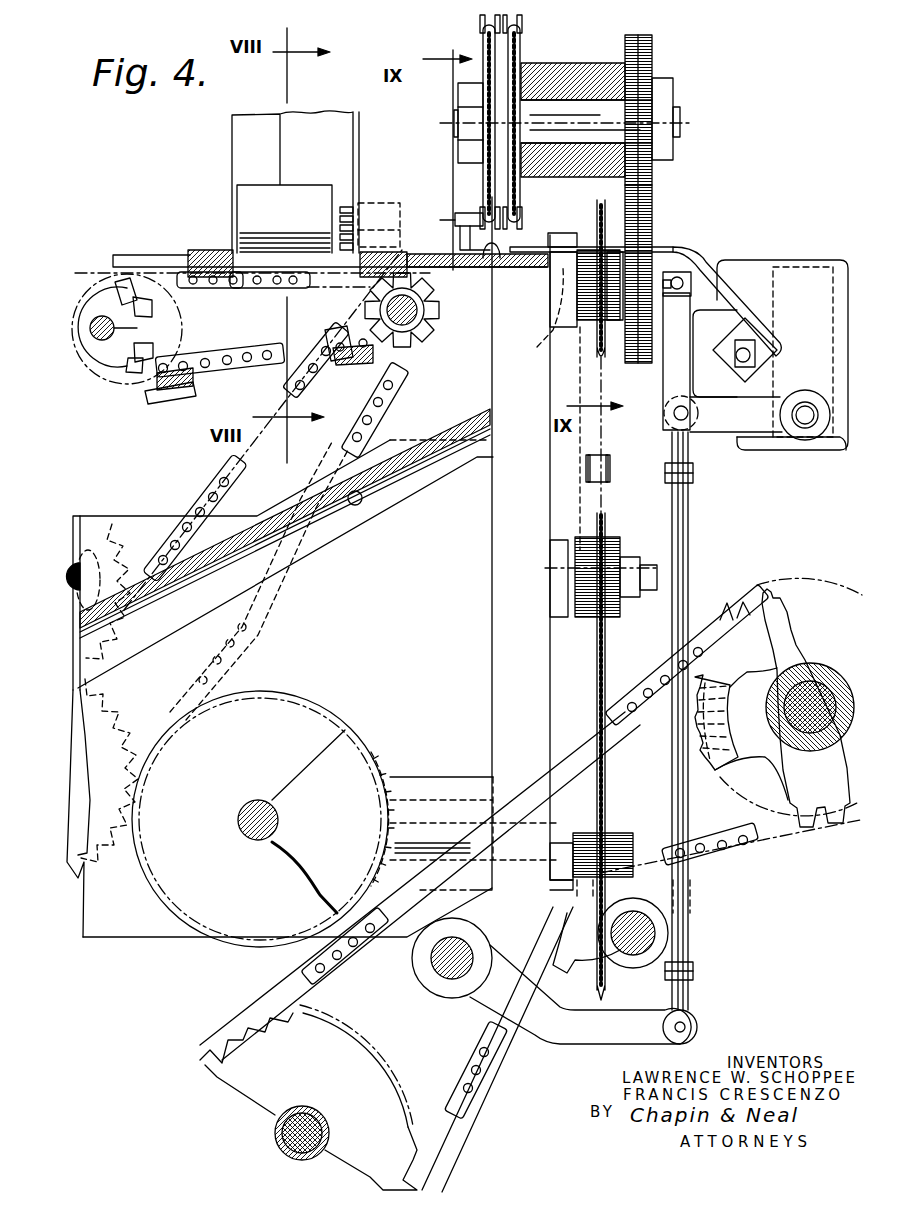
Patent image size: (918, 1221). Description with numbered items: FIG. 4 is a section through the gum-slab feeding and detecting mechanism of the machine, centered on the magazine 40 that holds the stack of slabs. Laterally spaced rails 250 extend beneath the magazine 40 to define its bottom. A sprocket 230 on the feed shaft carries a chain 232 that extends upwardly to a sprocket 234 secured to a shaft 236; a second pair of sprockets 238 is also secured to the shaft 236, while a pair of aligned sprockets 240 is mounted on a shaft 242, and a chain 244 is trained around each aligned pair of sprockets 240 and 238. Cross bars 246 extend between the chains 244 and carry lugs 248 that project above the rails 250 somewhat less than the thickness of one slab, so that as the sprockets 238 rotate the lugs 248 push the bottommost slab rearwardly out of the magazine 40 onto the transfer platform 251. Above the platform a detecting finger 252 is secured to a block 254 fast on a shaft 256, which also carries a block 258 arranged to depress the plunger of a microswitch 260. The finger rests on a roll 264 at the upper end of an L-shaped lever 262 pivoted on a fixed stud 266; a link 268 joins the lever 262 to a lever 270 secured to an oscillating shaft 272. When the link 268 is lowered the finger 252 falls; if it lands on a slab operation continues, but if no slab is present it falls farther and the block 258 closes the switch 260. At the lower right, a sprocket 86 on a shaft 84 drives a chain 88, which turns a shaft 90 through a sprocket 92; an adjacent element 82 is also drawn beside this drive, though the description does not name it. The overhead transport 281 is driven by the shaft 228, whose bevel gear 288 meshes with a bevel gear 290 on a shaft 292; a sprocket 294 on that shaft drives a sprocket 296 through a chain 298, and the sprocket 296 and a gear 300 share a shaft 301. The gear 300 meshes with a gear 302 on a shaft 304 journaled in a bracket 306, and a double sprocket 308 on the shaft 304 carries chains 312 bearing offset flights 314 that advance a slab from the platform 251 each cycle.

The magazine 40 is at (233, 137).
The double sprocket 308 is at (480, 37).
The bracket 306 is at (550, 63).
The overhead transport 281 is at (685, 48).
The shaft 304 is at (680, 110).
The gear 302 is at (653, 175).
The gear 300 is at (653, 220).
The chains 312 is at (522, 213).
The detecting finger 252 is at (523, 240).
The roll 264 is at (680, 257).
The microswitch 260 is at (747, 313).
The block 258 is at (760, 340).
The block 254 is at (755, 353).
The shaft 256 is at (747, 363).
The L-shaped lever 262 is at (723, 437).
The fixed stud 266 is at (803, 427).
The link 268 is at (688, 520).
The lugs 248 is at (400, 253).
The flights 314 is at (455, 233).
The rails 250 is at (125, 255).
The sprockets 238 is at (432, 288).
The shaft 236 is at (433, 323).
The sprocket 234 is at (373, 303).
The shaft 242 is at (150, 318).
The sprockets 240 is at (147, 344).
The cross bars 246 is at (257, 342).
The chain 244 is at (217, 370).
The chain 232 is at (373, 393).
The transfer platform 251 is at (493, 265).
The shaft 301 is at (532, 316).
The sprocket 296 is at (600, 360).
The chain 298 is at (608, 470).
The sprocket 294 is at (603, 663).
The sprocket 86 is at (763, 593).
The shaft 84 is at (810, 675).
The toothed sector 82 is at (715, 768).
The chain 88 is at (737, 855).
The shaft 292 is at (460, 793).
The bevel gear 290 is at (380, 770).
The bevel gear 288 is at (345, 730).
The sprocket 230 is at (129, 693).
The shaft 228 is at (242, 810).
The shaft 272 is at (468, 947).
The lever 270 is at (618, 1047).
The sprocket 92 is at (330, 987).
The shaft 90 is at (310, 1106).